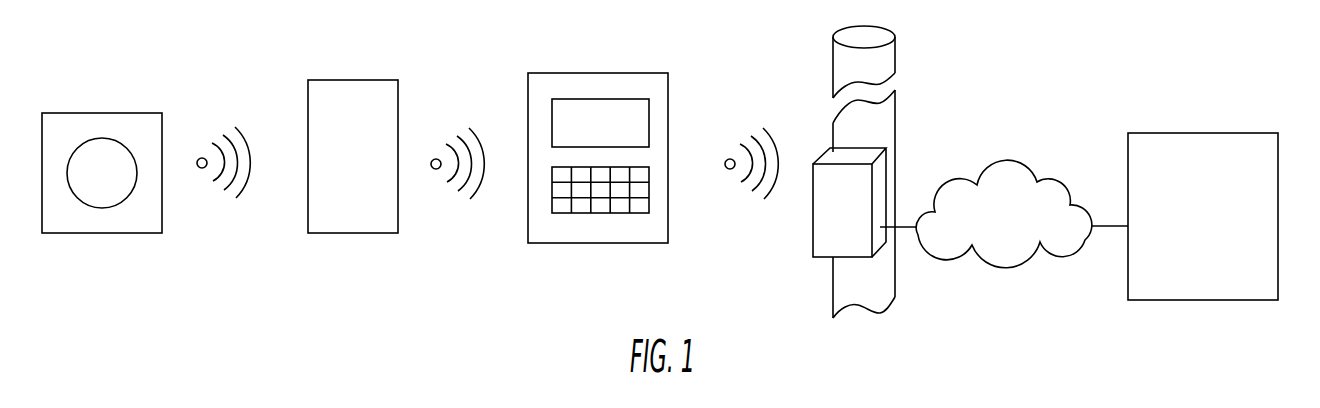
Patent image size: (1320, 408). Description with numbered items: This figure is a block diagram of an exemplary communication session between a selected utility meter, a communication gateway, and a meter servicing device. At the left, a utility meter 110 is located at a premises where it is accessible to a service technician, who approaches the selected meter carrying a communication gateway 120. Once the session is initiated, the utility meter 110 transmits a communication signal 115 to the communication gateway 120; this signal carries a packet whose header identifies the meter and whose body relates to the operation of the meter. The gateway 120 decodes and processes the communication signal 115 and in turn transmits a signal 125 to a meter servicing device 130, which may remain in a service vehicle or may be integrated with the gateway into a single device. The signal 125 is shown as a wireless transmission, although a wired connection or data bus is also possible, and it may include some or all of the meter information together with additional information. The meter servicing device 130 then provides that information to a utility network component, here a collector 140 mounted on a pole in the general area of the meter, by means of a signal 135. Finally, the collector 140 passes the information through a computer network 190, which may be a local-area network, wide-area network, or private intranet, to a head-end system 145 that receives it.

The utility meter 110 is at (70, 113).
The communication signal 115 is at (213, 191).
The communication gateway 120 is at (317, 80).
The signal 125 is at (442, 189).
The meter servicing device 130 is at (562, 73).
The signal 135 is at (729, 189).
The collector unit 140 is at (858, 223).
The head-end system 145 is at (1160, 133).
The computer network 190 is at (1018, 218).